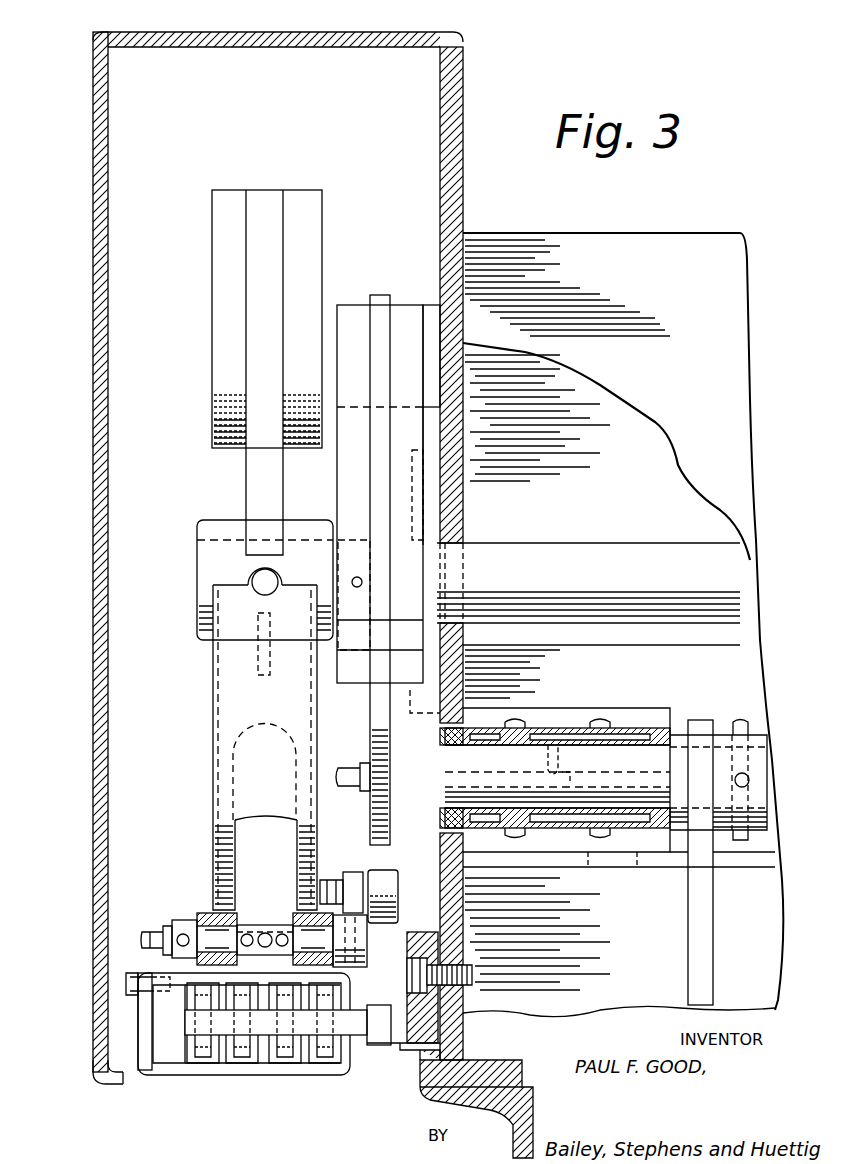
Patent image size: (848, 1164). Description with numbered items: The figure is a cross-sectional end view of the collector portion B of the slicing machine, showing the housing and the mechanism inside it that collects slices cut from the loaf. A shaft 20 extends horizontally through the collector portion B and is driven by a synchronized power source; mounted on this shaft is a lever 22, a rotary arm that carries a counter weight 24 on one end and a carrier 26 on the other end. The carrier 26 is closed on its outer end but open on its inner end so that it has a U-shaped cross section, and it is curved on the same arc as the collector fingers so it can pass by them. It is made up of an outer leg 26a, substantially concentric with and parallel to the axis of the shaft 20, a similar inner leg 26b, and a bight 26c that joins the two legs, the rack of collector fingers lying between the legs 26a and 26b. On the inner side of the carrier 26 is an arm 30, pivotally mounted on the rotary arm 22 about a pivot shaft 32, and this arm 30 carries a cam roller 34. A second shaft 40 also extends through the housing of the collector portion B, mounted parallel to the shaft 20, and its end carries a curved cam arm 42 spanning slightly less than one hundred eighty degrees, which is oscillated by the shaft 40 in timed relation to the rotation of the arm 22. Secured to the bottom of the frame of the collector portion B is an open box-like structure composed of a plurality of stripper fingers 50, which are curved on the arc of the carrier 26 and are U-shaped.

The collector portion B is at (83, 107).
The shaft 20 is at (517, 549).
The lever 22 is at (256, 490).
The counter weight 24 is at (212, 313).
The carrier 26 is at (258, 1068).
The outer leg 26a is at (204, 1066).
The inner leg 26b is at (350, 978).
The bight 26c is at (144, 1032).
The arm 30 is at (352, 864).
The pivot shaft 32 is at (197, 926).
The cam roller 34 is at (405, 868).
The shaft 40 is at (640, 780).
The cam arm 42 is at (372, 718).
The stripper fingers 50 is at (326, 1052).